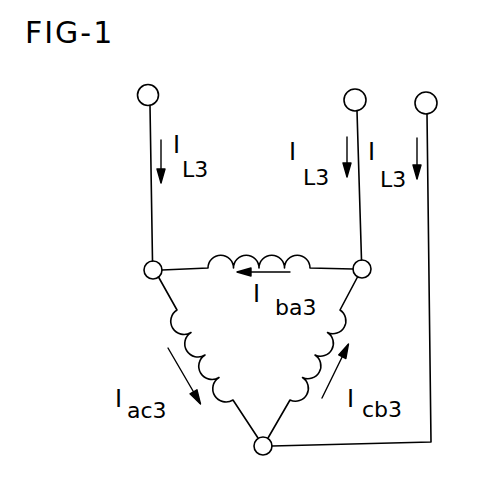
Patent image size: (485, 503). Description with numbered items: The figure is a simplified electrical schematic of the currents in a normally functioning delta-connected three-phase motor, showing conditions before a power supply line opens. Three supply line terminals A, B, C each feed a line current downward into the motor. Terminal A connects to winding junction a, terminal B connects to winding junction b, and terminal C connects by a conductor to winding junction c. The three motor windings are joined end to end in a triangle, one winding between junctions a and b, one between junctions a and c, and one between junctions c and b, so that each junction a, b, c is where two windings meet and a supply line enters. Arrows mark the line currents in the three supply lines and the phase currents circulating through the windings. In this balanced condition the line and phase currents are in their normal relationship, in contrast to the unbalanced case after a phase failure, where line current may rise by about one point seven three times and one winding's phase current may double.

The supply line terminal A is at (158, 173).
The supply line terminal B is at (366, 174).
The supply line terminal C is at (367, 269).
The winding junction a is at (161, 260).
The winding junction b is at (370, 257).
The winding junction c is at (276, 437).